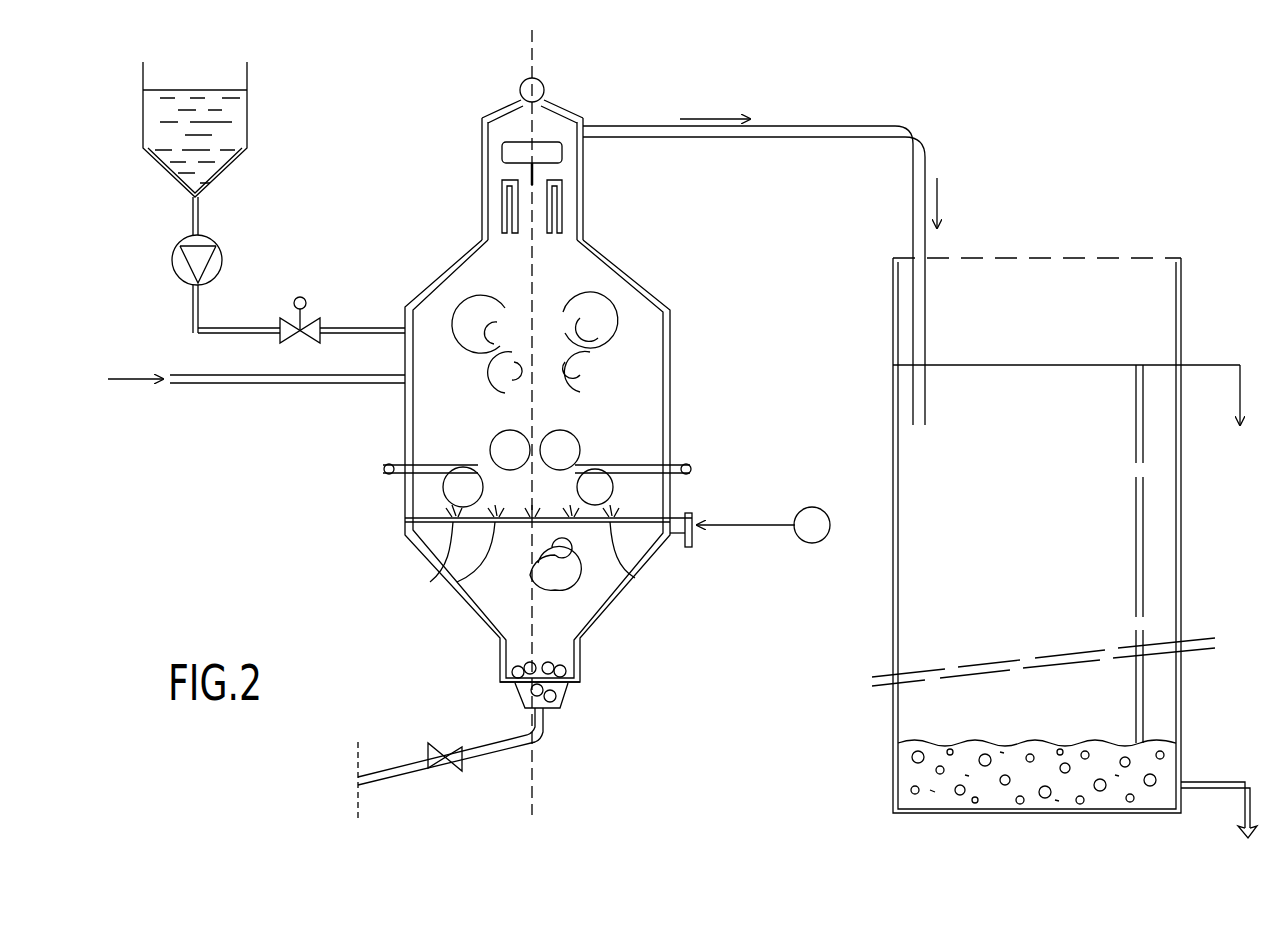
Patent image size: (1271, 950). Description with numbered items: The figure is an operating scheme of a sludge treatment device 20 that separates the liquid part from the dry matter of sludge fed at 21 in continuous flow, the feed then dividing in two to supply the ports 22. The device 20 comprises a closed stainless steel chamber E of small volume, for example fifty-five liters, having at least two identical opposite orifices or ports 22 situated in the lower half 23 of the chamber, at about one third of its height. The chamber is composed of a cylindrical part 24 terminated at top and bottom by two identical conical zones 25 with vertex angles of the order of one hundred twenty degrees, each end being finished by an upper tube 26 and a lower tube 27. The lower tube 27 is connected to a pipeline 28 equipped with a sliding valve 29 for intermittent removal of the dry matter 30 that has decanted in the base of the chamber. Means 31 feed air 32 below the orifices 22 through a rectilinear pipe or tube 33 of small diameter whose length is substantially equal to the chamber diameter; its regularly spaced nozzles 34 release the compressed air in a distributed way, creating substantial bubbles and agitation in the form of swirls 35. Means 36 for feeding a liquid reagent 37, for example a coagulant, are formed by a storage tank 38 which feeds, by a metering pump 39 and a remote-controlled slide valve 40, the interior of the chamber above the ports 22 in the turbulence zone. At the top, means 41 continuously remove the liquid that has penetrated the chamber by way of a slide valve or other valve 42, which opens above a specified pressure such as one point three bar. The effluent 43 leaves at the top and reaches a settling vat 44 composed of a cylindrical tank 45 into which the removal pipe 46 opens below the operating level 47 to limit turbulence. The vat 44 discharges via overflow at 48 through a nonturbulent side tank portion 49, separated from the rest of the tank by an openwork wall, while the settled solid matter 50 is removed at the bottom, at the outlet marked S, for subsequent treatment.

The device 20 is at (957, 126).
The sludge feed 21 is at (297, 385).
The orifices or ports 22 is at (386, 463).
The lower half of the chamber 23 is at (403, 519).
The cylindrical part 24 is at (672, 372).
The conical zones 25 is at (612, 268).
The upper tube 26 is at (558, 212).
The lower tube 27 is at (583, 664).
The pipeline 28 is at (493, 753).
The sliding valve 29 is at (443, 742).
The dry matter 30 is at (560, 690).
The means for feeding air 31 is at (812, 543).
The air 32 is at (748, 525).
The rectilinear pipe or tube 33 is at (612, 578).
The nozzles 34 is at (447, 587).
The swirls 35 is at (462, 300).
The means for feeding a liquid reagent 36 is at (256, 184).
The liquid reagent 37 is at (200, 108).
The storage tank 38 is at (165, 170).
The metering pump 39 is at (222, 265).
The remote-controlled slide valve 40 is at (313, 320).
The means for removing liquid 41 is at (590, 112).
The slide valve or other valve 42 is at (502, 150).
The effluent 43 is at (770, 122).
The settling vat 44 is at (891, 428).
The cylindrical tank 45 is at (1181, 512).
The removal pipe 46 is at (928, 163).
The operating level 47 is at (1047, 360).
The overflow 48 is at (1217, 365).
The nonturbulent side tank portion 49 is at (1155, 583).
The settled solid matter 50 is at (1150, 742).
The chamber E is at (674, 330).
The sludge outlet S is at (1212, 776).